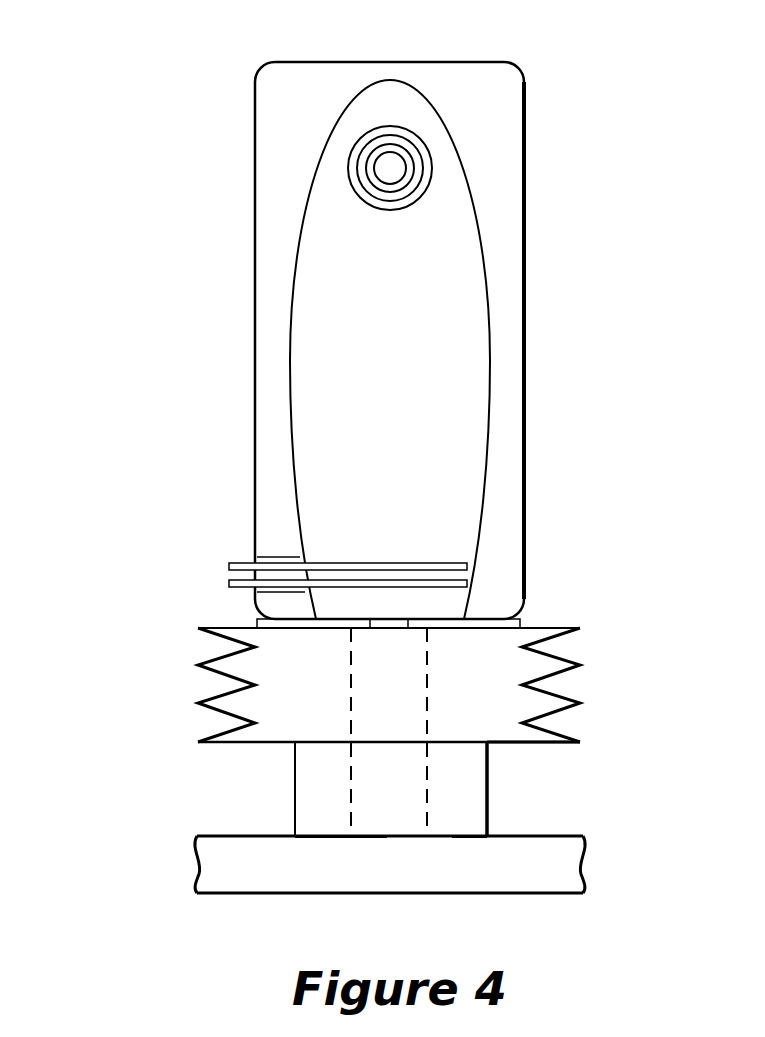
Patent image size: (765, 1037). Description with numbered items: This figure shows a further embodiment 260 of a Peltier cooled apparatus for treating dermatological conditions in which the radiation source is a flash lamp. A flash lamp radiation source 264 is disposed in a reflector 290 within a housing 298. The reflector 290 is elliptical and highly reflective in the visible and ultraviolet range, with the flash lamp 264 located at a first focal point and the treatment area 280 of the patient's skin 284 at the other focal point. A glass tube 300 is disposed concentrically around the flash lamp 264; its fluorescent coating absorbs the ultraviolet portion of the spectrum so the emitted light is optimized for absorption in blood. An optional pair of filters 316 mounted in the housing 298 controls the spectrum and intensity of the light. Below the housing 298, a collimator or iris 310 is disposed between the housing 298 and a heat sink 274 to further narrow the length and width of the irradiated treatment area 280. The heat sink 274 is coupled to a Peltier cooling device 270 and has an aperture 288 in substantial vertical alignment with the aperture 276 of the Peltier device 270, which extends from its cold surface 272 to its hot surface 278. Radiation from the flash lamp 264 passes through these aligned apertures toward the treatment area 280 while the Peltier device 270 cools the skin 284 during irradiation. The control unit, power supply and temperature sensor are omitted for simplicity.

The embodiment 260 is at (366, 450).
The housing 298 is at (342, 58).
The flash lamp radiation source 264 is at (412, 153).
The glass tube 300 is at (428, 183).
The reflector 290 is at (493, 312).
The filters 316 is at (355, 578).
The collimator or iris 310 is at (250, 620).
The heat sink 274 is at (580, 663).
The aperture 288 is at (405, 678).
The aperture 276 is at (406, 789).
The hot surface 278 is at (450, 743).
The Peltier cooling device 270 is at (489, 784).
The cold surface 272 is at (452, 837).
The treatment area 280 is at (387, 837).
The skin 284 is at (584, 863).